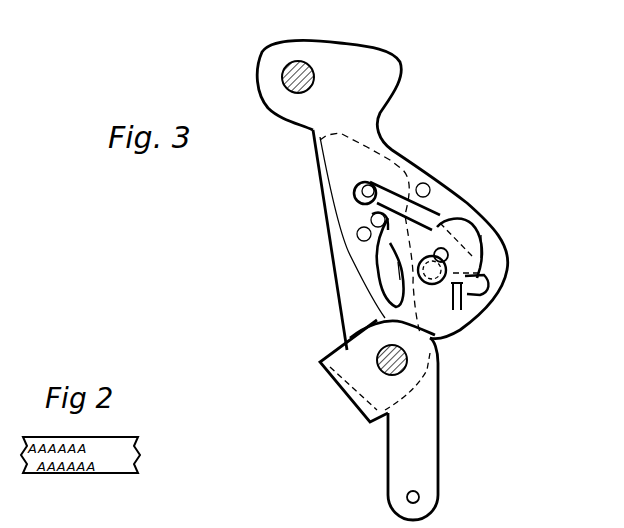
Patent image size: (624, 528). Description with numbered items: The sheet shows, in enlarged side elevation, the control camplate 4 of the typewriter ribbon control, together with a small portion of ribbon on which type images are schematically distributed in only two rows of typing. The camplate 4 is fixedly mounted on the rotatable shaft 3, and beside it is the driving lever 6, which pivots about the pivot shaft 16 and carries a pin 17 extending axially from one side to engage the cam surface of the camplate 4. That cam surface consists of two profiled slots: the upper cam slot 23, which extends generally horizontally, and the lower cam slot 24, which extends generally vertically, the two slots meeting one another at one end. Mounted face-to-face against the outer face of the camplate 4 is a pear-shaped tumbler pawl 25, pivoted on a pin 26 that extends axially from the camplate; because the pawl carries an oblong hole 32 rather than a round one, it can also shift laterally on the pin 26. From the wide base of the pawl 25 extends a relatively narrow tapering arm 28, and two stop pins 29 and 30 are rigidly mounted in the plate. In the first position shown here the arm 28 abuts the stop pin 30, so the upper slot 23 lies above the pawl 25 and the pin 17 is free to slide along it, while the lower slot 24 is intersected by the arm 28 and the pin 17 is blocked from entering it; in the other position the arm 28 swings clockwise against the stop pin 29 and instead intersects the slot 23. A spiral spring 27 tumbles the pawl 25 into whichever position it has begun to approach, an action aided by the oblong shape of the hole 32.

The rotatable shaft 3 is at (287, 77).
The control camplate 4 is at (383, 88).
The driving lever 6 is at (423, 430).
The pivot shaft 16 is at (377, 357).
The pin 17 is at (372, 189).
The upper cam slot 23 is at (440, 217).
The lower cam slot 24 is at (378, 283).
The tumbler pawl 25 is at (470, 226).
The pin 26 is at (488, 279).
The spiral spring 27 is at (462, 307).
The tapering arm 28 is at (372, 218).
The stop pin 29 is at (430, 188).
The stop pin 30 is at (357, 234).
The oblong hole 32 is at (447, 257).